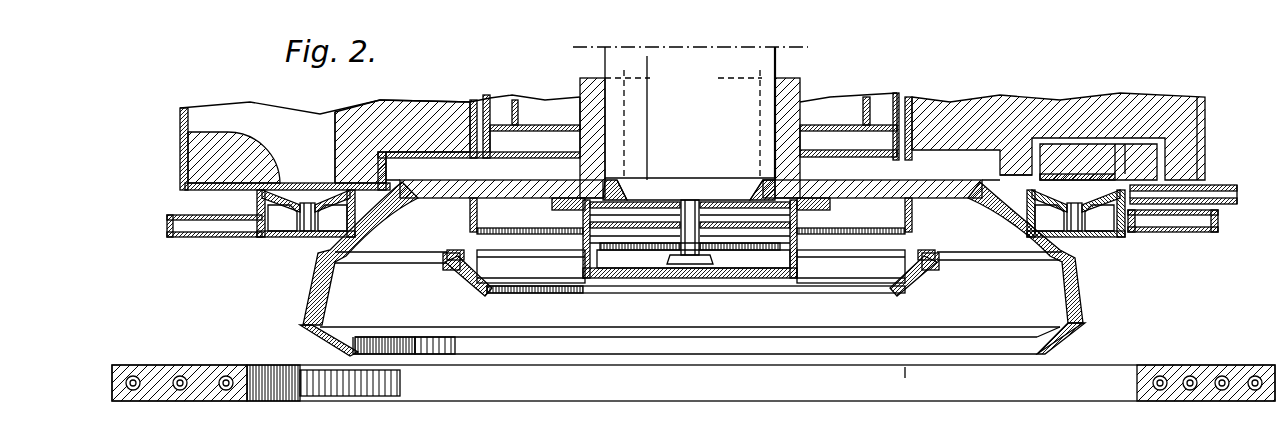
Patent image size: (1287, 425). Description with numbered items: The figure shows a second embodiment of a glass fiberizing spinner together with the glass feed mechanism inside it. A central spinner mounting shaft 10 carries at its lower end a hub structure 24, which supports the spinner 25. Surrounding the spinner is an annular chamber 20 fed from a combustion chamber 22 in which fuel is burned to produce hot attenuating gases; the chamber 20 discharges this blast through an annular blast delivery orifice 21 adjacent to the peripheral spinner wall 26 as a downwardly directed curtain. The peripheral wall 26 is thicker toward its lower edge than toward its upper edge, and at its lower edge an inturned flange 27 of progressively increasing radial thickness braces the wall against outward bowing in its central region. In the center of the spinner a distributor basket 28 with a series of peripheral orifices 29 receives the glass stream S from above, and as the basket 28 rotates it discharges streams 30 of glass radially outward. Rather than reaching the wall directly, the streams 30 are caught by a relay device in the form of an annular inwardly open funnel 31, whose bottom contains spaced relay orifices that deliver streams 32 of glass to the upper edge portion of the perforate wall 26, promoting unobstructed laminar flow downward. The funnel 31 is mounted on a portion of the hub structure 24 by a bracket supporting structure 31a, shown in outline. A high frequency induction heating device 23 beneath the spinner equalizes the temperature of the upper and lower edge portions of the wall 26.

The spinner mounting shaft 10 is at (662, 60).
The combustion chamber 22 is at (262, 120).
The hub structure 24 is at (806, 78).
The glass stream S is at (690, 210).
The annular chamber 20 is at (308, 196).
The annular blast delivery orifice 21 is at (308, 236).
The bracket supporting structure 31a is at (470, 218).
The peripheral orifices 29 is at (588, 270).
The distributor basket 28 is at (668, 275).
The streams of glass 30 is at (846, 258).
The annular inwardly open funnel 31 is at (906, 284).
The streams of glass 32 is at (995, 262).
The peripheral spinner wall 26 is at (1080, 289).
The spinner 25 is at (1083, 318).
The inturned flange 27 is at (1058, 343).
The high frequency induction heating device 23 is at (1208, 366).